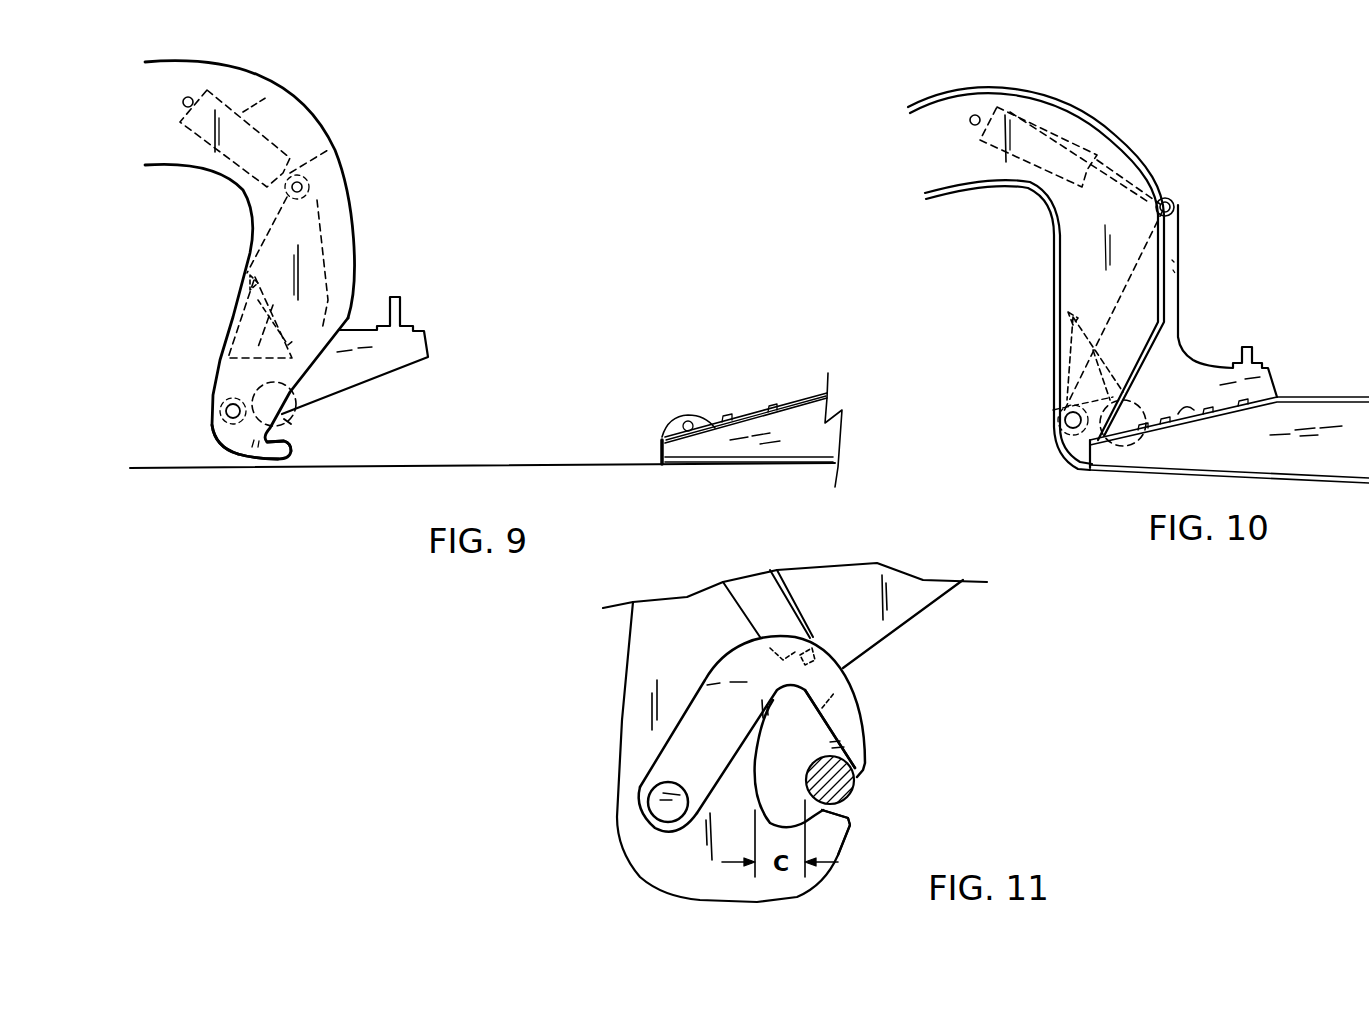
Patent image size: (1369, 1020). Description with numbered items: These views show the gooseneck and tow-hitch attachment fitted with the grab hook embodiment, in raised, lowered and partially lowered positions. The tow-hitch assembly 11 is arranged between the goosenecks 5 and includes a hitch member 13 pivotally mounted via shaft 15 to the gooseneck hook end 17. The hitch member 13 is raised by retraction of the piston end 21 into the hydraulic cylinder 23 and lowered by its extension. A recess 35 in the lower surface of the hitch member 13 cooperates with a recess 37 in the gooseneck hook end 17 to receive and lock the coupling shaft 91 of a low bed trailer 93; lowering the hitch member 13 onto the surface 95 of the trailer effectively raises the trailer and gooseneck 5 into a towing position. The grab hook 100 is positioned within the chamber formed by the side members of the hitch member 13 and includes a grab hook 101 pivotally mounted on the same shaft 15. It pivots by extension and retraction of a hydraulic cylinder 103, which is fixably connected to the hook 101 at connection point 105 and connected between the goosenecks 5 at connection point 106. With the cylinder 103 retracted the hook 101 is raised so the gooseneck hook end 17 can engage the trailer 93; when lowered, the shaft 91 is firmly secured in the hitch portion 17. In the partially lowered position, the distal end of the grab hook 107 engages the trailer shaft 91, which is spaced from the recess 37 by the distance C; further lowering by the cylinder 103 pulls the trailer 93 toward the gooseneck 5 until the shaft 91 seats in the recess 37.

In FIG. 9, the gooseneck 5 is at (232, 195).
In FIG. 10, the gooseneck 5 is at (1053, 242).
In FIG. 11, the gooseneck 5 is at (915, 622).
In FIG. 9, the tow-hitch assembly 11 is at (372, 188).
In FIG. 9, the hitch member 13 is at (346, 328).
In FIG. 10, the hitch member 13 is at (1182, 333).
In FIG. 9, the shaft 15 is at (226, 413).
In FIG. 10, the shaft 15 is at (1064, 423).
In FIG. 11, the shaft 15 is at (658, 810).
In FIG. 9, the gooseneck hook end 17 is at (266, 458).
In FIG. 11, the gooseneck hook end 17 is at (820, 886).
In FIG. 9, the piston end 21 is at (333, 150).
In FIG. 10, the piston end 21 is at (1130, 168).
In FIG. 9, the hydraulic cylinder 23 is at (287, 92).
In FIG. 10, the hydraulic cylinder 23 is at (1106, 120).
In FIG. 9, the recess 35 is at (292, 418).
In FIG. 9, the recess 37 is at (280, 439).
In FIG. 11, the recess 37 is at (842, 815).
In FIG. 9, the coupling shaft 91 is at (687, 421).
In FIG. 11, the coupling shaft 91 is at (848, 788).
In FIG. 9, the low bed trailer 93 is at (767, 358).
In FIG. 10, the low bed trailer 93 is at (1325, 397).
In FIG. 9, the surface 95 is at (748, 414).
In FIG. 10, the surface 95 is at (1190, 412).
In FIG. 9, the grab hook 100 is at (312, 383).
In FIG. 9, the grab hook 101 is at (222, 374).
In FIG. 10, the grab hook 101 is at (1148, 400).
In FIG. 11, the grab hook 101 is at (860, 690).
In FIG. 9, the hydraulic cylinder 103 is at (240, 313).
In FIG. 11, the hydraulic cylinder 103 is at (790, 592).
In FIG. 9, the connection point 105 is at (228, 354).
In FIG. 11, the connection point 105 is at (820, 650).
In FIG. 9, the connection point 106 is at (246, 272).
In FIG. 10, the connection point 106 is at (1062, 320).
In FIG. 11, the distal end of the grab hook 107 is at (866, 750).